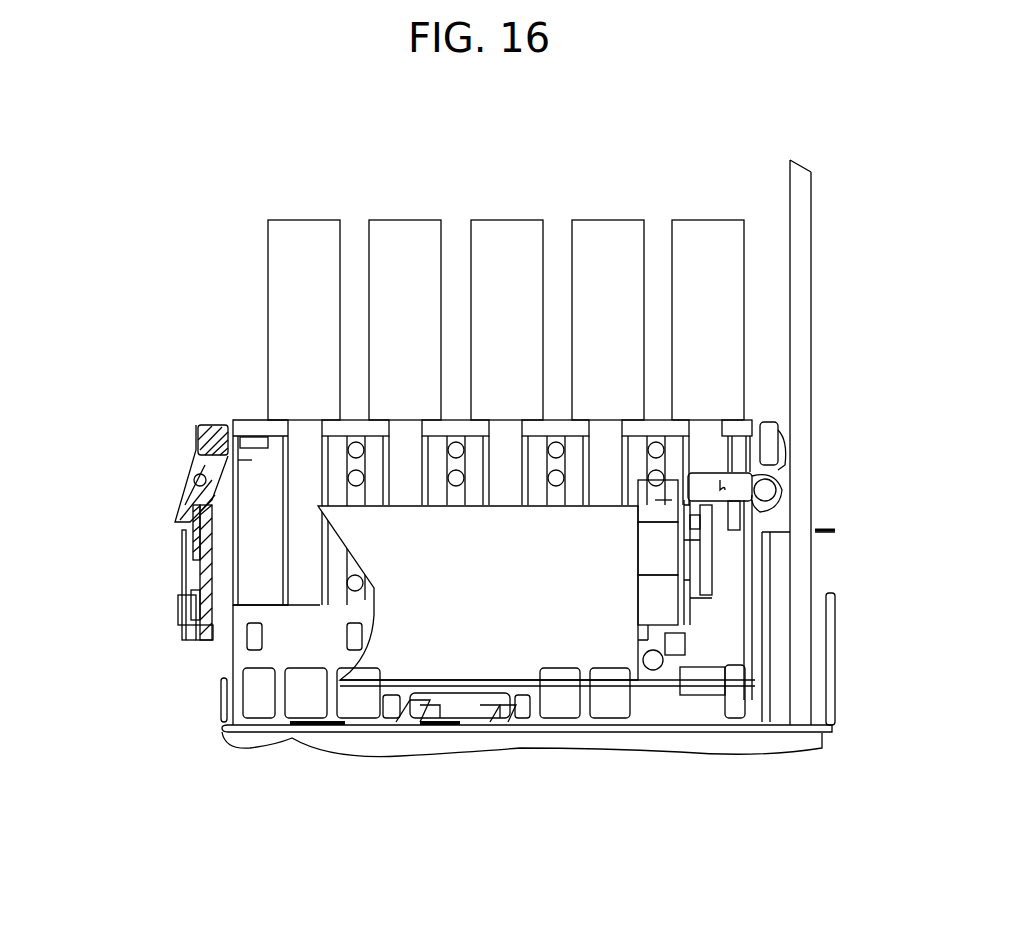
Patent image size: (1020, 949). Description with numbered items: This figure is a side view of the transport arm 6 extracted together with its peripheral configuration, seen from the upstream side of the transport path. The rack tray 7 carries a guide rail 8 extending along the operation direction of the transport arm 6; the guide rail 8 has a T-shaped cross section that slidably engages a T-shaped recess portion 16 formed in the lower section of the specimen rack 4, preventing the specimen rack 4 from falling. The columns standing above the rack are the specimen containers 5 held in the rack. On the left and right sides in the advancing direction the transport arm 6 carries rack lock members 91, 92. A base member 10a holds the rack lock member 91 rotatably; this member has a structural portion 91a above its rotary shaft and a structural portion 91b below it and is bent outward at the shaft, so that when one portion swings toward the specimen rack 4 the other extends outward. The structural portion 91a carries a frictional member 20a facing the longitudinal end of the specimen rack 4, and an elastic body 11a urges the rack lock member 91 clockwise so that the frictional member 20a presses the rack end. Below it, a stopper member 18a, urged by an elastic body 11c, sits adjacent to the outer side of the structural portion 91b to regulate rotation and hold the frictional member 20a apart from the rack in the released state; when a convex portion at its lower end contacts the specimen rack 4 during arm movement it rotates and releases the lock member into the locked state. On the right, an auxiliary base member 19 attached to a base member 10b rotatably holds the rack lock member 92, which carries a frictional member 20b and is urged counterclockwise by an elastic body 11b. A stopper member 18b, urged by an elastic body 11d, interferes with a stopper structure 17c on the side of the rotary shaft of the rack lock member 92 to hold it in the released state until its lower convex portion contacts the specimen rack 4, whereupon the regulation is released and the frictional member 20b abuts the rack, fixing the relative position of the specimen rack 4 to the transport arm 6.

The specimen rack 4 is at (305, 730).
The cartridge 5 is at (708, 236).
The transport arm 6 is at (196, 588).
The rack tray 7 is at (582, 728).
The guide rail 8 is at (456, 722).
The T-shaped recess portion 16 is at (394, 725).
The auxiliary base member 19 is at (708, 472).
The rack lock member 91 is at (172, 432).
The structural portion 91a is at (197, 425).
The structural portion 91b is at (180, 520).
The rack lock member 92 is at (766, 380).
The base member 10a is at (176, 500).
The base member 10b is at (780, 545).
The elastic body 11a is at (185, 517).
The elastic body 11b is at (782, 460).
The elastic body 11c is at (194, 645).
The elastic body 11d is at (727, 634).
The stopper structure 17c is at (777, 494).
The stopper member 18a is at (183, 618).
The stopper member 18b is at (740, 612).
The frictional member 20a is at (210, 425).
The frictional member 20b is at (768, 420).